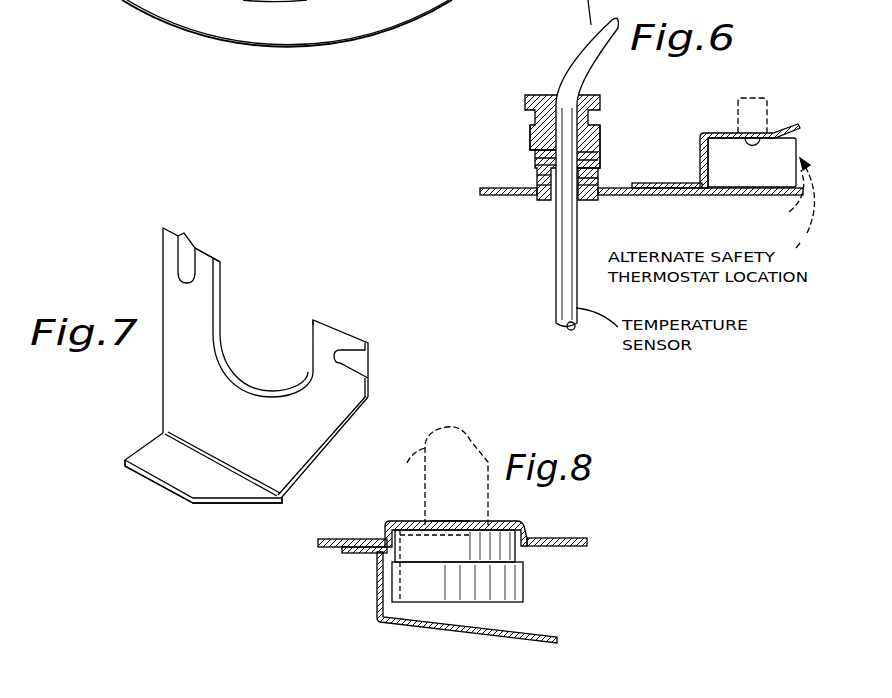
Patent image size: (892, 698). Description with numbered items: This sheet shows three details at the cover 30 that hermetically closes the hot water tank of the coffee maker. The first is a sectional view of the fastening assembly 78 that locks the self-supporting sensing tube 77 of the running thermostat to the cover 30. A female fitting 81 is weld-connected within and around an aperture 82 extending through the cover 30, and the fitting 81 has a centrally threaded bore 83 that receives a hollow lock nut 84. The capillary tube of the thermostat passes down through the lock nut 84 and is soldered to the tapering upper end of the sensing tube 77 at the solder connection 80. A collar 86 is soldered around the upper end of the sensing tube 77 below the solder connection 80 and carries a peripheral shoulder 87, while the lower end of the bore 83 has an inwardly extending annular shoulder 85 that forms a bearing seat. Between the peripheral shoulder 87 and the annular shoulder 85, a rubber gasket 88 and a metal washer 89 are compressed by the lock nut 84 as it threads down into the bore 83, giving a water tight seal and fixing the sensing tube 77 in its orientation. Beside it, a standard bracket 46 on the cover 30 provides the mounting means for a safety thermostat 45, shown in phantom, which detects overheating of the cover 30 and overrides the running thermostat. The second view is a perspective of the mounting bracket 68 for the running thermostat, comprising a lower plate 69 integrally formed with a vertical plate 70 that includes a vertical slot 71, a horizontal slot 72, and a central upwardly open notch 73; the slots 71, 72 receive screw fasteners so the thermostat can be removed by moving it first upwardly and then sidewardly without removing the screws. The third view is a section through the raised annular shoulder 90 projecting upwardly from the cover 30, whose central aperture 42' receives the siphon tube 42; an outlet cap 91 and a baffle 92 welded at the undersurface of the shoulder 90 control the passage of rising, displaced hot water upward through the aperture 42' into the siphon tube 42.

In FIG. 6, the cover 30 is at (710, 196).
In FIG. 8, the cover 30 is at (586, 540).
In FIG. 8, the siphon tube 42 is at (442, 476).
In FIG. 8, the central aperture 42' is at (450, 499).
In FIG. 6, the safety thermostat 45 is at (791, 210).
In FIG. 6, the bracket 46 is at (702, 146).
In FIG. 7, the mounting bracket 68 is at (186, 385).
In FIG. 7, the lower plate 69 is at (176, 471).
In FIG. 7, the vertical plate 70 is at (320, 428).
In FIG. 7, the vertical slot 71 is at (190, 250).
In FIG. 7, the horizontal slot 72 is at (368, 368).
In FIG. 7, the central upwardly open notch 73 is at (273, 352).
In FIG. 6, the sensing tube 77 is at (571, 298).
In FIG. 6, the fastening assembly 78 is at (484, 152).
In FIG. 6, the solder connection 80 is at (553, 156).
In FIG. 6, the female fitting 81 is at (600, 140).
In FIG. 6, the aperture 82 is at (596, 195).
In FIG. 6, the threaded bore 83 is at (528, 132).
In FIG. 6, the lock nut 84 is at (538, 97).
In FIG. 6, the annular shoulder 85 is at (596, 176).
In FIG. 6, the collar 86 is at (594, 160).
In FIG. 6, the peripheral shoulder 87 is at (540, 170).
In FIG. 6, the rubber gasket 88 is at (545, 190).
In FIG. 6, the metal washer 89 is at (538, 176).
In FIG. 8, the raised annular shoulder 90 is at (507, 521).
In FIG. 8, the outlet cap 91 is at (524, 578).
In FIG. 8, the baffle 92 is at (532, 632).